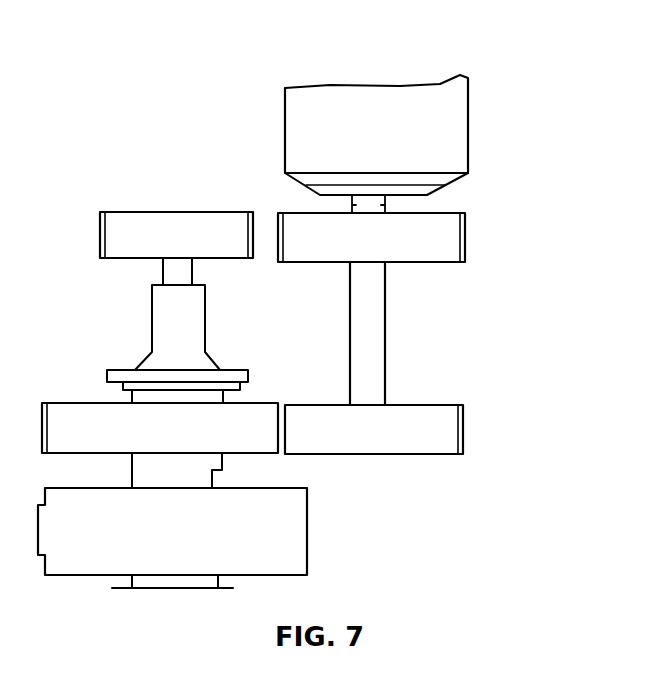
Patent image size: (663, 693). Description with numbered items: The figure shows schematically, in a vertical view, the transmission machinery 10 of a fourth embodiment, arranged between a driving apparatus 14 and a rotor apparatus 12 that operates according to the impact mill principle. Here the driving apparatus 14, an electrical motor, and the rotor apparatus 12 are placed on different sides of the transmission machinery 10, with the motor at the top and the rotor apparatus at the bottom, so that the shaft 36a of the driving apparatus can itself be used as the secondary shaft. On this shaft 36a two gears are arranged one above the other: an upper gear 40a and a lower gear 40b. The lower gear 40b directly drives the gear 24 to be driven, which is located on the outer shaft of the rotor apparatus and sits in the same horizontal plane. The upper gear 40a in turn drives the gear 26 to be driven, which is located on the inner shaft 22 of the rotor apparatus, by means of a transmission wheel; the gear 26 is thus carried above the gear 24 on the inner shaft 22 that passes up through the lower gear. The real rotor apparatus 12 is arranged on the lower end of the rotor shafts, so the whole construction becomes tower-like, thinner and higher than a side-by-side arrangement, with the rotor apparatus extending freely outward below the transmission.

The transmission machinery 10 is at (507, 304).
The rotor apparatus 12 is at (293, 556).
The driving apparatus 14 is at (378, 110).
The inner shaft 22 is at (165, 268).
The gear to be driven 24 is at (160, 428).
The gear to be driven 26 is at (176, 235).
The shaft of the driving apparatus 36a is at (374, 328).
The upper gear 40a is at (371, 237).
The lower gear 40b is at (374, 429).